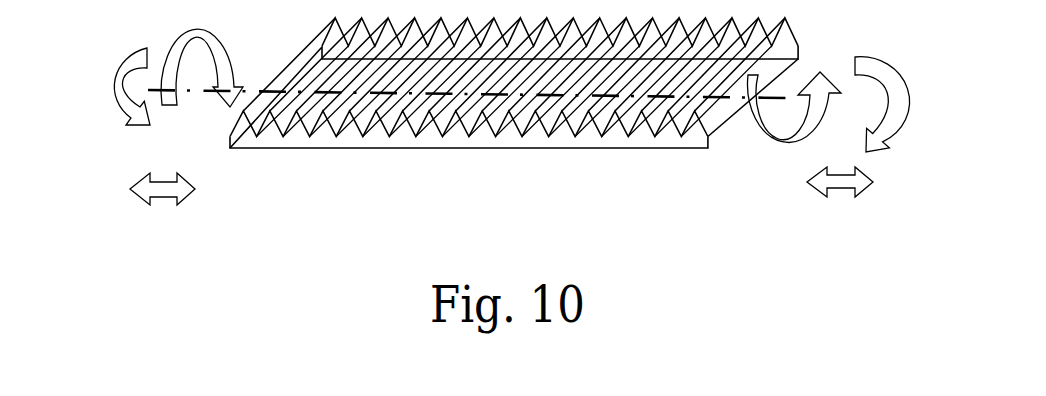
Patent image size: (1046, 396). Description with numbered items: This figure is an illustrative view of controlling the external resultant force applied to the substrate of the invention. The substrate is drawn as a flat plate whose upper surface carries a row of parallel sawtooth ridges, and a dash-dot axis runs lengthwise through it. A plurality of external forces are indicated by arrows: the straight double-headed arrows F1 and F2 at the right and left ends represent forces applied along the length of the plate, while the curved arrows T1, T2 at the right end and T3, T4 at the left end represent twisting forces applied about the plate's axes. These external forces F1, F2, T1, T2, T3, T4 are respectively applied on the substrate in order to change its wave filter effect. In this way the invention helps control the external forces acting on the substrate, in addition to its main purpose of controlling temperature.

The external force (torque) T1 is at (901, 104).
The external force (torque) T2 is at (810, 107).
The external force (torque) T3 is at (202, 59).
The external force (torque) T4 is at (112, 86).
The external force F1 is at (840, 199).
The external force F2 is at (162, 207).